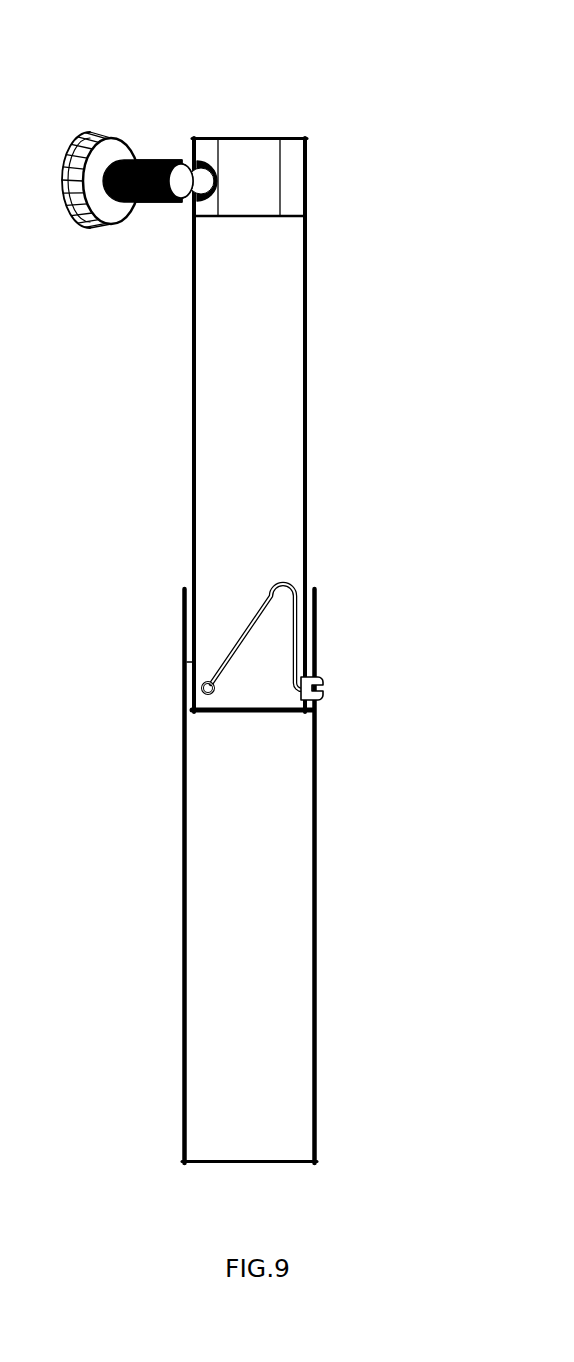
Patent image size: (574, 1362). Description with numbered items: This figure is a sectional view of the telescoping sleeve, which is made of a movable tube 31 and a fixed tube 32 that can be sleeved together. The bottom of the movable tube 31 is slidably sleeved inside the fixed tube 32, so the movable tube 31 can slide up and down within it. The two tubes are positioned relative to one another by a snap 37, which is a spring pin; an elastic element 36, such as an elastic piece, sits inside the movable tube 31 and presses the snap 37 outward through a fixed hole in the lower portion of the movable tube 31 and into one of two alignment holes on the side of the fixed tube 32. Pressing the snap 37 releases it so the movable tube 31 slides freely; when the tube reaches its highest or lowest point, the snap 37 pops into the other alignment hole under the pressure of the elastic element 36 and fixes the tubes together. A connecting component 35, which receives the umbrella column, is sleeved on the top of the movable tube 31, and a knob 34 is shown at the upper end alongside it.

The movable tube 31 is at (283, 355).
The fixed tube 32 is at (193, 925).
The knob 34 is at (97, 167).
The connecting component 35 is at (273, 184).
The elastic element 36 is at (300, 588).
The snap 37 is at (323, 688).